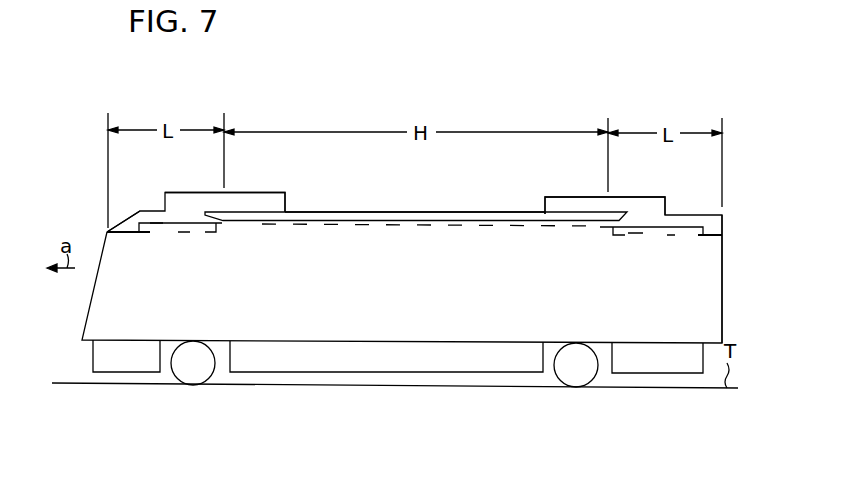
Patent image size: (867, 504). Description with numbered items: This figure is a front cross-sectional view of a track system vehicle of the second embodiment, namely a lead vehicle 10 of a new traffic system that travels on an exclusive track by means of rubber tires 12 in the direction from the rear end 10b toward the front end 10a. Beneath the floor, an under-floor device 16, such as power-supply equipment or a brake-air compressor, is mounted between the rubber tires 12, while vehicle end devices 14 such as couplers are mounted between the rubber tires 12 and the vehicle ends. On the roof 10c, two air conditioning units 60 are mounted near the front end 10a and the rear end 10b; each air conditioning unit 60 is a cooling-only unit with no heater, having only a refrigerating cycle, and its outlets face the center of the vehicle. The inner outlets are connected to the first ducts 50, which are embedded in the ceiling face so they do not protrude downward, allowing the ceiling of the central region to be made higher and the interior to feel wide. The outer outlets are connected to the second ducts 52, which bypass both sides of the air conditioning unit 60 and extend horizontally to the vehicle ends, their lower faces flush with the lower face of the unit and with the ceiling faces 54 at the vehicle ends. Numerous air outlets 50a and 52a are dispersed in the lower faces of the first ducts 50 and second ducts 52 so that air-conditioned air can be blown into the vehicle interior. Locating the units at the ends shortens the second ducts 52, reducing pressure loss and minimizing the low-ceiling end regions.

The lead vehicle 10 is at (487, 109).
The front end 10a is at (107, 232).
The rear end 10b is at (722, 250).
The roof 10c is at (440, 212).
The rubber tires 12 is at (193, 378).
The vehicle end devices 14 is at (125, 365).
The under-floor device 16 is at (378, 373).
The first ducts 50 is at (395, 223).
The air outlets 50a is at (455, 227).
The second ducts 52 is at (185, 232).
The air outlets 52a is at (162, 233).
The ceiling faces 54 is at (122, 237).
The air conditioning unit 60 is at (255, 192).